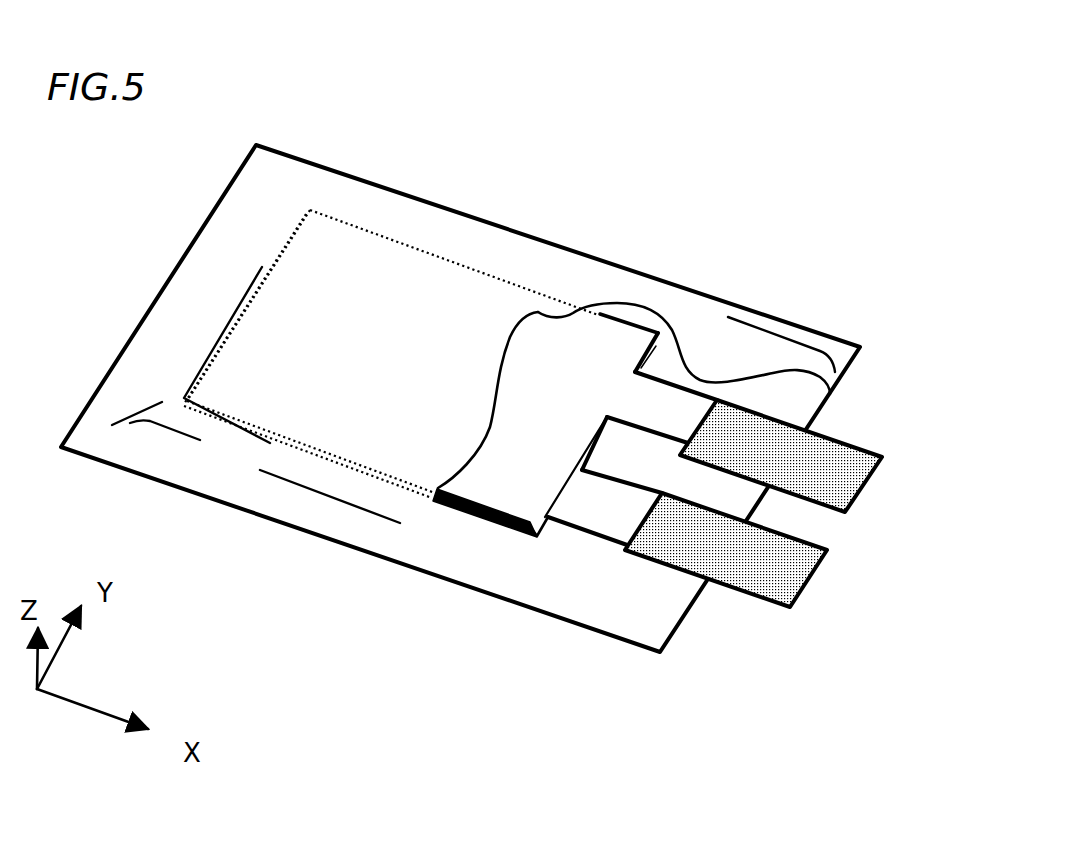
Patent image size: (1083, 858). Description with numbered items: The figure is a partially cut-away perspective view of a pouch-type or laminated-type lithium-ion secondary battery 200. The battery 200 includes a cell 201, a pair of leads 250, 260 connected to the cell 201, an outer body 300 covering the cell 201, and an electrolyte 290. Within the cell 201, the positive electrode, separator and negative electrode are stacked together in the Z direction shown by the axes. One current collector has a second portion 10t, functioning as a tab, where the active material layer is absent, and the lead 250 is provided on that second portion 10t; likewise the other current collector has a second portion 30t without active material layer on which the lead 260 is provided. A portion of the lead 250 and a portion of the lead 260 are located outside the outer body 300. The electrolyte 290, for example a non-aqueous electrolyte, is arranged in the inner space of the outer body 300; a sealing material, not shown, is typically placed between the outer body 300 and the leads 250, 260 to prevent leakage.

The outer body 300 is at (157, 292).
The lithium-ion secondary battery 200 is at (722, 168).
The cell 201 is at (568, 360).
The second portion 30t is at (680, 400).
The second portion 10t is at (605, 518).
The lead 260 is at (862, 490).
The lead 250 is at (763, 563).
The electrolyte 290 is at (432, 505).